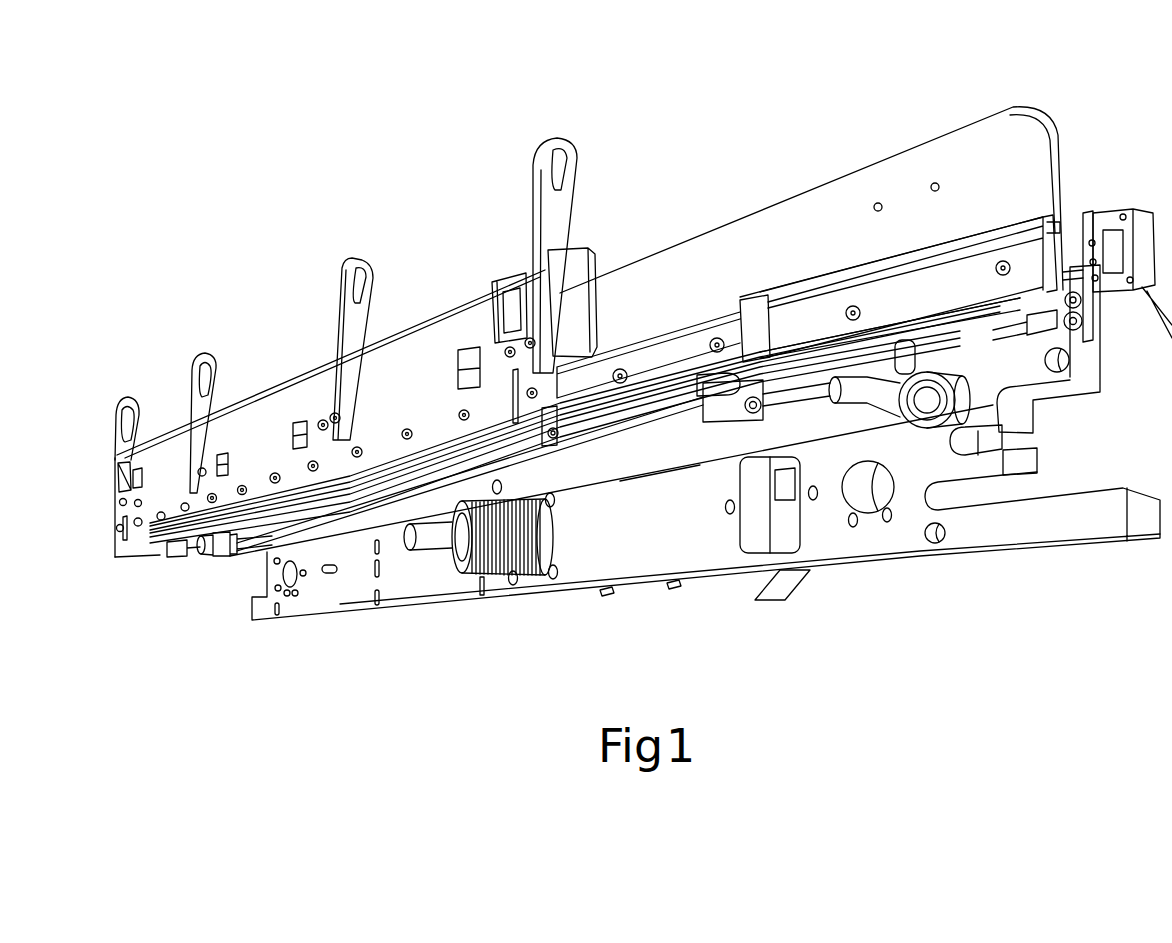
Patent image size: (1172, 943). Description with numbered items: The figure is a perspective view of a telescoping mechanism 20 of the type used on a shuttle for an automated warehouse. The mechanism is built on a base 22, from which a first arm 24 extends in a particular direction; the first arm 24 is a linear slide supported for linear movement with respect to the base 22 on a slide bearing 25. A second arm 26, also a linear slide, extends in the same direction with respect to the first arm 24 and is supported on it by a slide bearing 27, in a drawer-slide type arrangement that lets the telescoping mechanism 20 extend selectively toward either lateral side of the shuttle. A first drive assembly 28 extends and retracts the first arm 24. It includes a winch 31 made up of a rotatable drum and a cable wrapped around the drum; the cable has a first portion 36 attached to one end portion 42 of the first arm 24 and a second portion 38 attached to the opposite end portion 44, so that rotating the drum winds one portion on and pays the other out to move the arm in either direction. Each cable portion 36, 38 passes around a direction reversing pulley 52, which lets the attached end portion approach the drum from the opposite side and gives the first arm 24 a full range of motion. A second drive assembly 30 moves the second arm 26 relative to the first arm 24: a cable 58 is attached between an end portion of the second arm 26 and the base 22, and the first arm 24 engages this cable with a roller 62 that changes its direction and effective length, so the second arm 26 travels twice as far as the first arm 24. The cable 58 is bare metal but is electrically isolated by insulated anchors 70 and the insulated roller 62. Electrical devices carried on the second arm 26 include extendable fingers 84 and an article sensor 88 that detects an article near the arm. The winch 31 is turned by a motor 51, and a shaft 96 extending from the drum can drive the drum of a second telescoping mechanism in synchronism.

The telescoping mechanism 20 is at (745, 62).
The base 22 is at (928, 140).
The first arm 24 is at (734, 298).
The slide bearing 25 is at (893, 268).
The second arm 26 is at (572, 248).
The slide bearing 27 is at (650, 382).
The first drive assembly 28 is at (597, 543).
The second drive assembly 30 is at (998, 326).
The winch 31 is at (462, 577).
The first portion 36 is at (617, 480).
The second portion 38 is at (318, 538).
The end portion 42 is at (170, 557).
The end portion 44 is at (713, 425).
The motor 51 is at (772, 602).
The direction reversing pulley 52 is at (218, 555).
The cable 58 is at (943, 347).
The roller 62 is at (700, 378).
The insulated anchor 70 is at (1073, 338).
The extendable finger 84 is at (142, 378).
The article sensor 88 is at (510, 280).
The shaft 96 is at (420, 547).